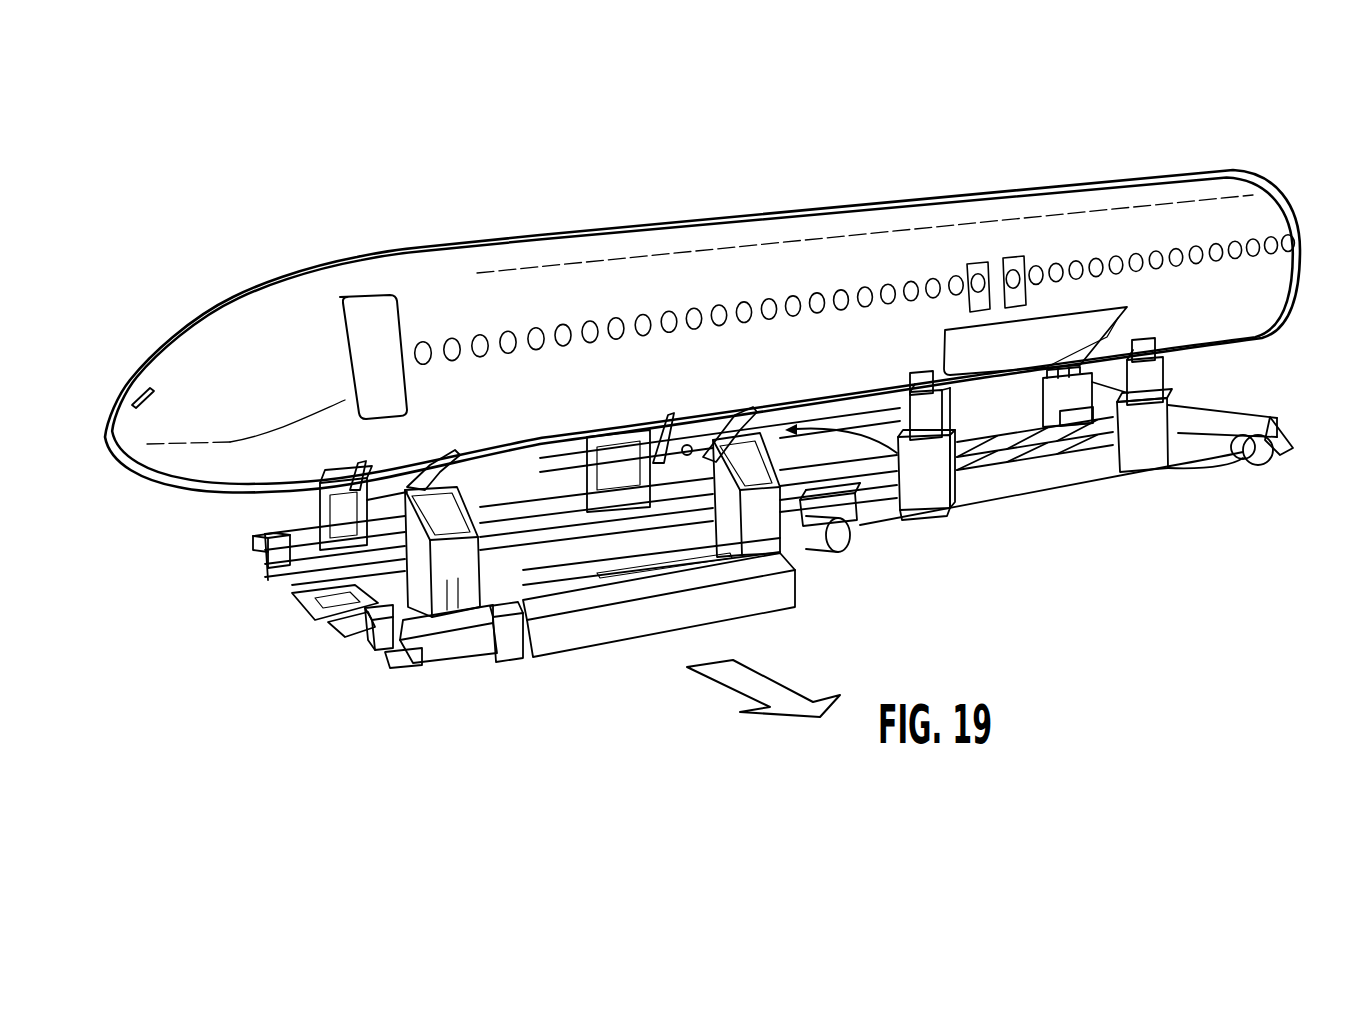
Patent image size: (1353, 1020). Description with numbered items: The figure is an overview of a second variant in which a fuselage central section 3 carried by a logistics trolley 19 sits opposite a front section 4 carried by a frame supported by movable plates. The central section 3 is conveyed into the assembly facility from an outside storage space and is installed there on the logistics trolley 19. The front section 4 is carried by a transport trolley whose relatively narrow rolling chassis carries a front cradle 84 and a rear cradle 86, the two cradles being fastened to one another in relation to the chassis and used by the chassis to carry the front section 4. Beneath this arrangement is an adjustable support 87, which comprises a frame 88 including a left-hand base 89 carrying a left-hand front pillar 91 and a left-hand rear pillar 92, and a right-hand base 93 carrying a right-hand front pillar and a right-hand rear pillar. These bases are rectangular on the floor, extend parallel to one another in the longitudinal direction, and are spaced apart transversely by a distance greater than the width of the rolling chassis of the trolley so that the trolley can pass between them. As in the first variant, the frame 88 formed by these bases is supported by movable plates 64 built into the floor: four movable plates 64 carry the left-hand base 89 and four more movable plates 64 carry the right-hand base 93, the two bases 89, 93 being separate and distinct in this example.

The central section 3 is at (702, 281).
The front section 4 is at (1035, 152).
The logistics trolley 19 is at (728, 570).
The movable plates 64 is at (420, 657).
The front cradle 84 is at (306, 508).
The rear cradle 86 is at (858, 462).
The adjustable support 87 is at (650, 712).
The frame 88 is at (866, 565).
The left-hand base 89 is at (490, 632).
The left-hand front pillar 91 is at (305, 587).
The left-hand rear pillar 92 is at (850, 526).
The right-hand base 93 is at (510, 537).